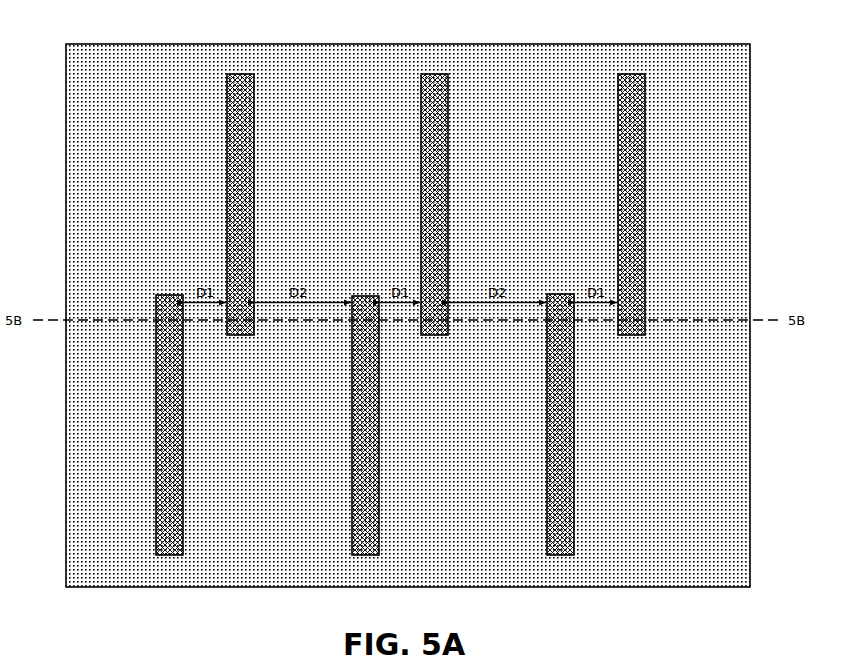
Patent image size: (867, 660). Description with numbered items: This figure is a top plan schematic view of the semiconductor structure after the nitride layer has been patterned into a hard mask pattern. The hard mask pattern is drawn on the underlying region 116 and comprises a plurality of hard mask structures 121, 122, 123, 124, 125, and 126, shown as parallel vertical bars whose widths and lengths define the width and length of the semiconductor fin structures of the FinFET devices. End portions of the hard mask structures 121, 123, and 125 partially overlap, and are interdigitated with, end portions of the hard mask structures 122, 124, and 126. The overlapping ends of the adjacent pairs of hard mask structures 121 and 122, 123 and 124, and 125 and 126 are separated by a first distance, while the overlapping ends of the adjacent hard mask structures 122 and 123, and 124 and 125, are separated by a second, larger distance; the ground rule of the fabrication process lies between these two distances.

The substrate / memory array region 116 is at (78, 60).
The hard mask structure 121 is at (183, 483).
The hard mask structure 122 is at (227, 148).
The hard mask structure 123 is at (379, 483).
The hard mask structure 124 is at (421, 148).
The hard mask structure 125 is at (574, 483).
The hard mask structure 126 is at (618, 148).